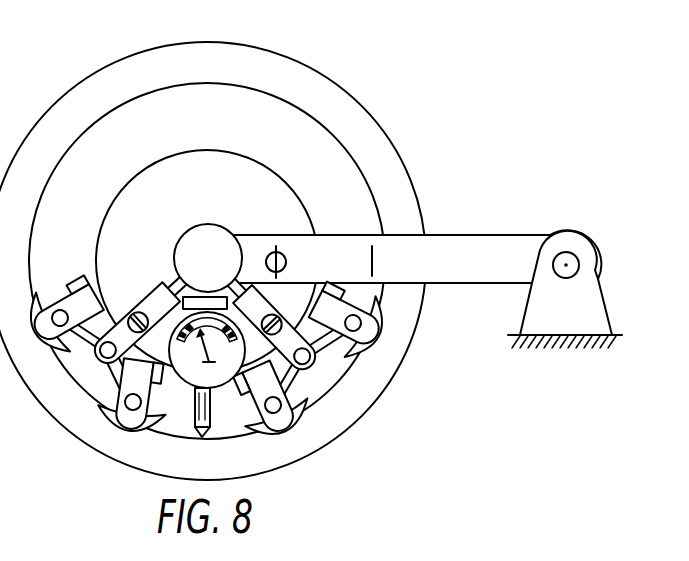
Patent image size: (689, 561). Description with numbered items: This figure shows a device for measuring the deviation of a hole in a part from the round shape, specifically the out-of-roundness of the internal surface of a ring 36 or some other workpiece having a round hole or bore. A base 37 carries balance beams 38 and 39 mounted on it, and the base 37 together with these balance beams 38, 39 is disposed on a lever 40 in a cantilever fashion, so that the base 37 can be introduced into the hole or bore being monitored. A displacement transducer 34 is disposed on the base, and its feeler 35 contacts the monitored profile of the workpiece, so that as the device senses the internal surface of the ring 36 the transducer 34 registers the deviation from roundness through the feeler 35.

The displacement transducer 34 is at (190, 370).
The feeler 35 is at (197, 423).
The ring 36 is at (342, 92).
The base 37 is at (143, 172).
The balance beam 38 is at (88, 335).
The balance beam 39 is at (48, 292).
The lever 40 is at (455, 235).